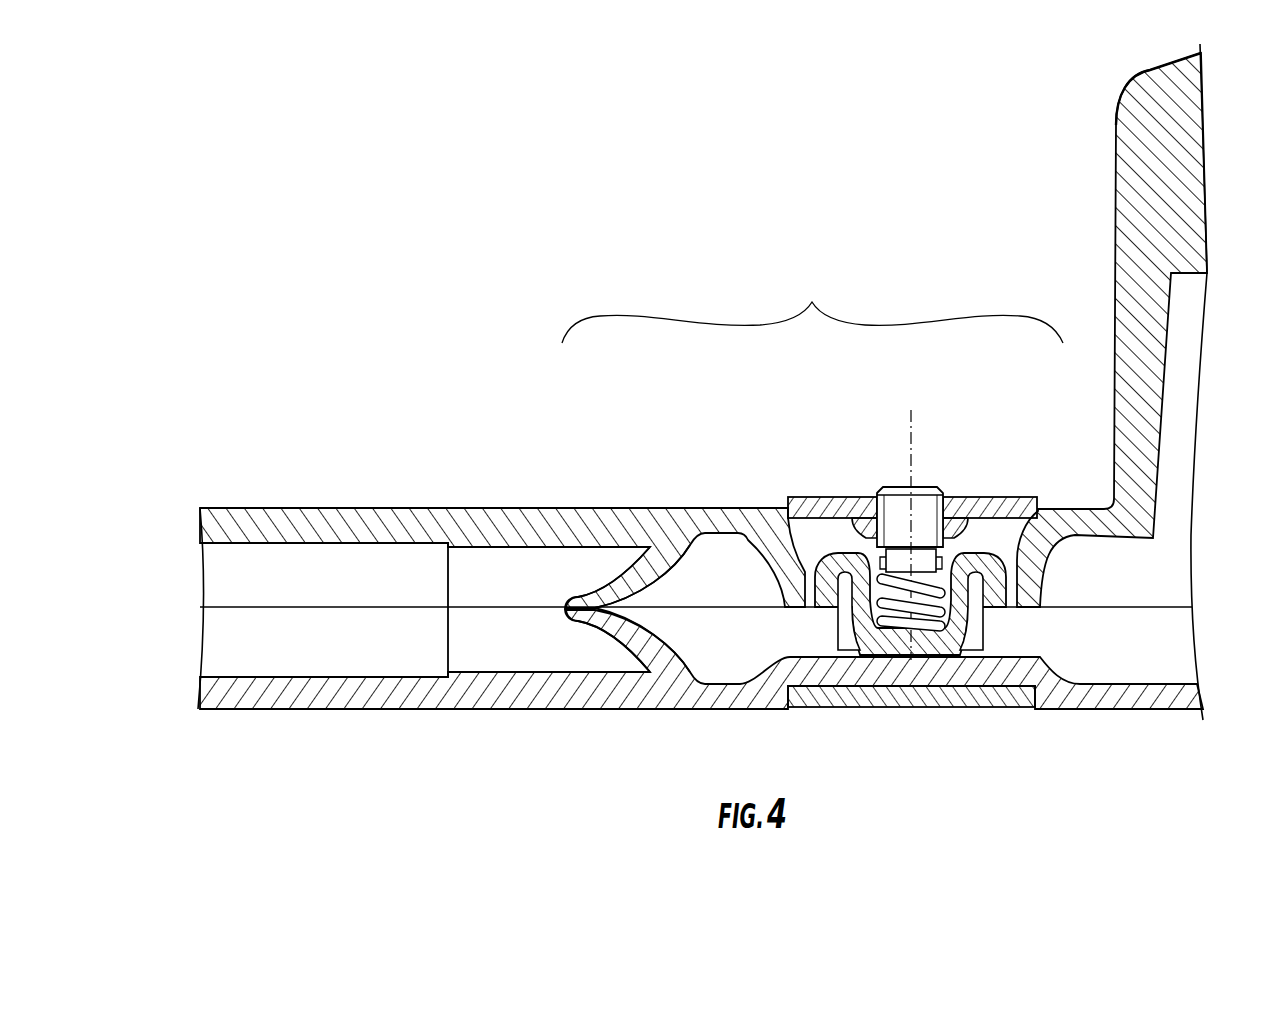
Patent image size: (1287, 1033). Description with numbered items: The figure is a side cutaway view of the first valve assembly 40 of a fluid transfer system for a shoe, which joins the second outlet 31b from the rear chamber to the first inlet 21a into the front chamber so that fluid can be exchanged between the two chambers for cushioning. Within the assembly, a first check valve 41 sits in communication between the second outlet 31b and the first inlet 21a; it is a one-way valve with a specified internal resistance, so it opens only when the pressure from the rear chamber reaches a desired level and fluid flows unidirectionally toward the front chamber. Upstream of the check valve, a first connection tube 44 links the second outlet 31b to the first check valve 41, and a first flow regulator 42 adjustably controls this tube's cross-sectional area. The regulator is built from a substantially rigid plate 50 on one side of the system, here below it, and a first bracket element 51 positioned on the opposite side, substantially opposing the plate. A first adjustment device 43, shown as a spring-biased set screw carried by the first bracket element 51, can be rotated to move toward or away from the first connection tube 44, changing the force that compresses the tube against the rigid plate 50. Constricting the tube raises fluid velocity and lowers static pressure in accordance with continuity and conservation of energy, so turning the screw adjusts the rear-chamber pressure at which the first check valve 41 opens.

The first inlet 21a is at (372, 647).
The second outlet 31b is at (1103, 634).
The first valve assembly 40 is at (815, 302).
The first check valve 41 is at (613, 640).
The first flow regulator 42 is at (793, 470).
The first adjustment device 43 is at (928, 485).
The first connection tube 44 is at (812, 641).
The rigid plate 50 is at (948, 705).
The first bracket element 51 is at (847, 495).